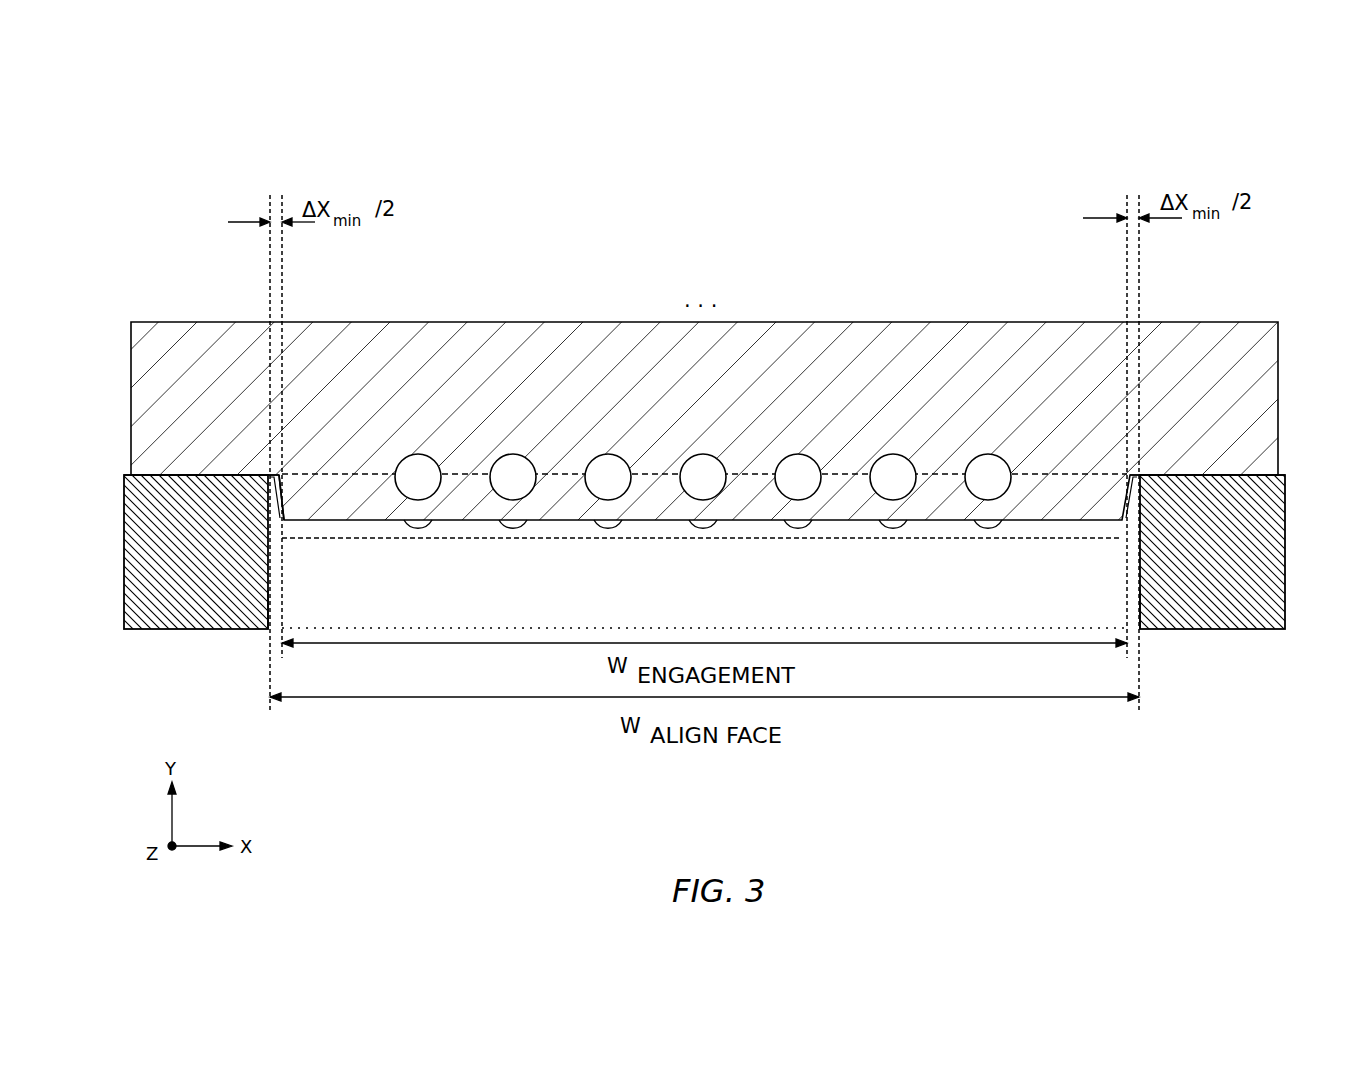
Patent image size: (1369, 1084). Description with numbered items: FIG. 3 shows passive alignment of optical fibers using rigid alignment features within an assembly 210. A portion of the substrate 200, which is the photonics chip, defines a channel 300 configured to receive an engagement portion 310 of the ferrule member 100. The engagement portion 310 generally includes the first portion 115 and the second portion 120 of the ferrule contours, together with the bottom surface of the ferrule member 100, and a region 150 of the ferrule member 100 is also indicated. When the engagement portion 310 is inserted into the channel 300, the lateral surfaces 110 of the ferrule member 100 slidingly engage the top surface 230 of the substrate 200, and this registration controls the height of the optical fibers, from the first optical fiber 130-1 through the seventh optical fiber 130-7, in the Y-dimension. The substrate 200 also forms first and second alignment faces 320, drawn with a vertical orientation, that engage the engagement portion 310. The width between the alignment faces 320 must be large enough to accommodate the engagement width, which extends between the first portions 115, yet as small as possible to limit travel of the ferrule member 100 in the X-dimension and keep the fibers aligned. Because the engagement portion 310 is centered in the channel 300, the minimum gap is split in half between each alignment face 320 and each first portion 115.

The ferrule member 100 is at (1230, 322).
The lateral surfaces 110 is at (152, 477).
The first portion 115 is at (272, 506).
The second portion 120 is at (283, 520).
The optical fiber 130-1 is at (418, 455).
The optical fiber 130-7 is at (993, 455).
The substrate of first component 150 is at (178, 345).
The substrate 200 is at (190, 604).
The assembly 210 is at (800, 148).
The top surface 230 is at (160, 478).
The channel 300 is at (712, 596).
The engagement portion 310 is at (985, 538).
The alignment faces 320 is at (268, 600).